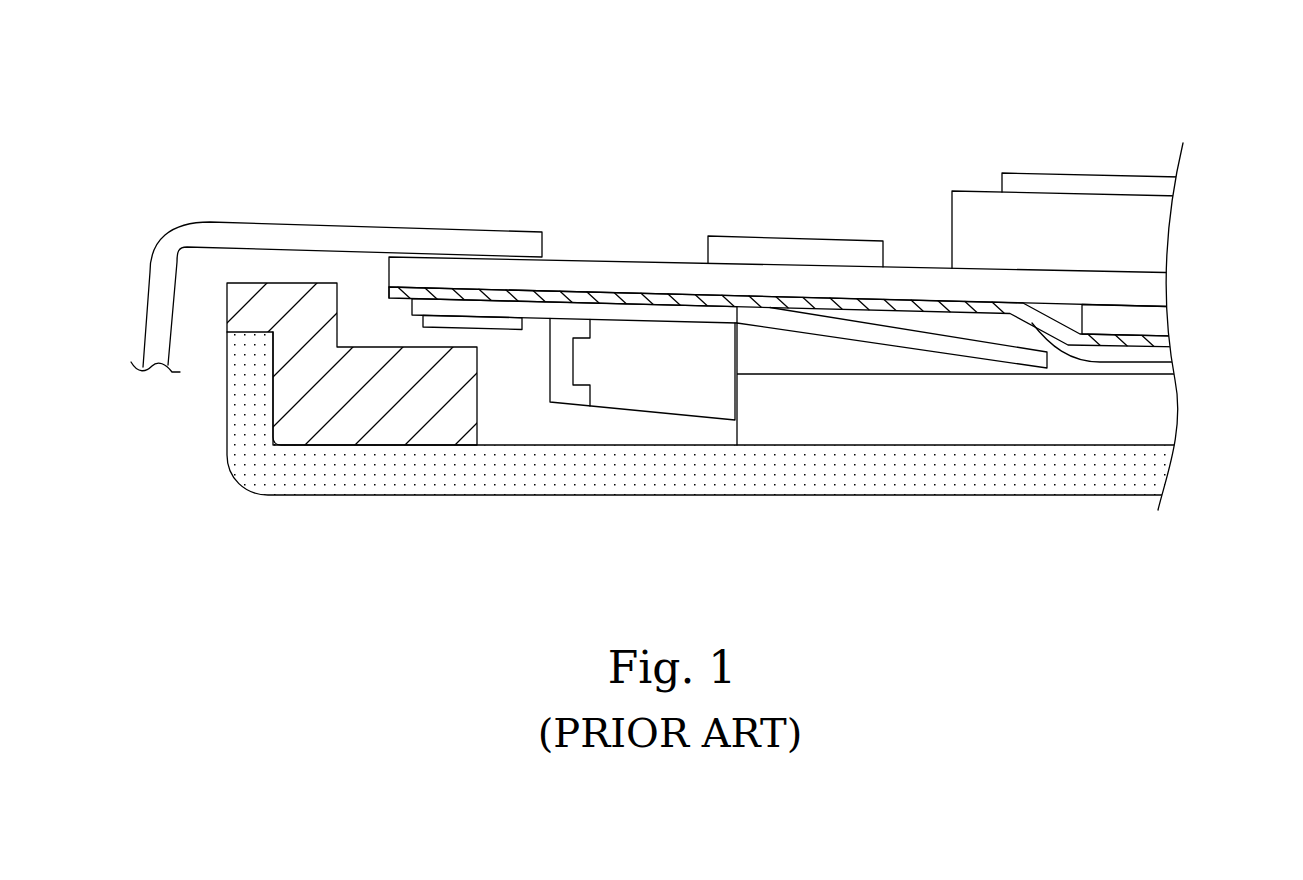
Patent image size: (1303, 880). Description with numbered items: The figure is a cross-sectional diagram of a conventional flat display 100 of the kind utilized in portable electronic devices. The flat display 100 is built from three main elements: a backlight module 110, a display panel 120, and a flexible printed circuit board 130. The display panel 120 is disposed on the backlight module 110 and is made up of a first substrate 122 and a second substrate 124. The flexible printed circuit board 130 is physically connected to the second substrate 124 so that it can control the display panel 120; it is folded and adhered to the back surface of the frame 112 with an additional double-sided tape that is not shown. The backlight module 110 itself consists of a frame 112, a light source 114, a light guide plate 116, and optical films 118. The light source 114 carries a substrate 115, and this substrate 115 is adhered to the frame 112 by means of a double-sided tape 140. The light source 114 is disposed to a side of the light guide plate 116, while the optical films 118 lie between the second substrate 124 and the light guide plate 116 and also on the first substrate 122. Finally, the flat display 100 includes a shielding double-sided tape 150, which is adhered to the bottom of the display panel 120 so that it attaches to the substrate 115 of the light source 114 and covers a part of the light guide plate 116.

The flat display 100 is at (277, 166).
The backlight module 110 is at (220, 420).
The frame 112 is at (370, 407).
The light source 114 is at (648, 368).
The substrate 115 is at (640, 312).
The light guide plate 116 is at (1162, 412).
The optical films 118 is at (1158, 188).
The display panel 120 is at (880, 95).
The first substrate 122 is at (972, 207).
The second substrate 124 is at (907, 263).
The flexible printed circuit board 130 is at (155, 296).
The double-sided tape 140 is at (495, 322).
The shielding double-sided tape 150 is at (1167, 354).